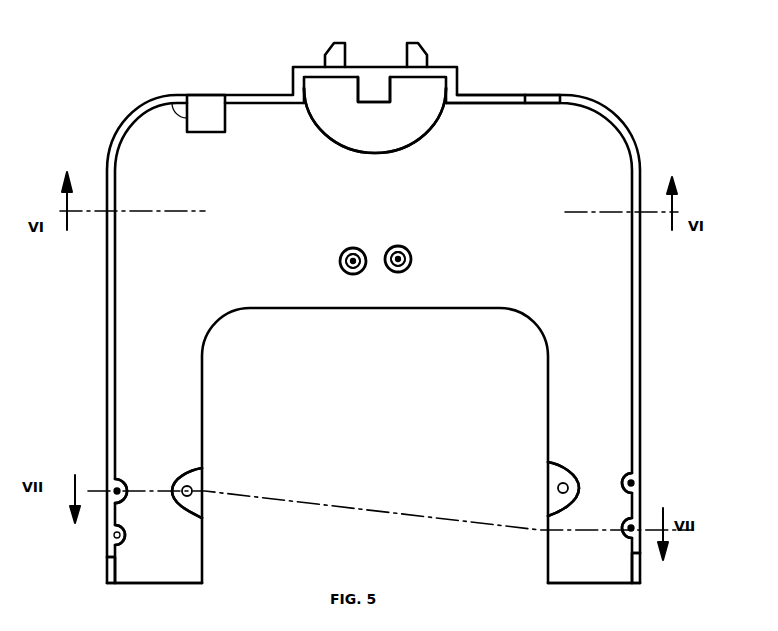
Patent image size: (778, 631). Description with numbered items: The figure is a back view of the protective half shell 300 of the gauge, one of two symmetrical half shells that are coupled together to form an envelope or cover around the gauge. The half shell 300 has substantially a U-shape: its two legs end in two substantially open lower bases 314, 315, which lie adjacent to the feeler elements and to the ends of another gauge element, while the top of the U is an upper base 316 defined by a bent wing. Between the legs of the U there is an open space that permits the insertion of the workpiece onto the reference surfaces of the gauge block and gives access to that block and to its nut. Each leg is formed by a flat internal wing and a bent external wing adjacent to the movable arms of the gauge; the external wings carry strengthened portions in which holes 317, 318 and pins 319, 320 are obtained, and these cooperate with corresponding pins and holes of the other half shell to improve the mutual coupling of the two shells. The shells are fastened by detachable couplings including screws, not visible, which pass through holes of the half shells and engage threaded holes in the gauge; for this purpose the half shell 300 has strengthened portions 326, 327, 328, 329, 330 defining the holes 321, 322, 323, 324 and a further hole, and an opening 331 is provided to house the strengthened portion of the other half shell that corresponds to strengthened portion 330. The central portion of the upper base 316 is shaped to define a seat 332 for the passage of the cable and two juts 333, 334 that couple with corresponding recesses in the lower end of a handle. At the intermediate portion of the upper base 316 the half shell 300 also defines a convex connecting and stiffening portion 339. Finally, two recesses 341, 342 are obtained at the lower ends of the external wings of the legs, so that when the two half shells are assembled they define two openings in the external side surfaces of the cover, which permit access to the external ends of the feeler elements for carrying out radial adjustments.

The half shell 300 is at (90, 330).
The lower base 314 is at (155, 591).
The lower base 315 is at (575, 590).
The upper base 316 is at (497, 99).
The hole 317 is at (116, 489).
The hole 318 is at (634, 527).
The pin 319 is at (114, 536).
The pin 320 is at (634, 482).
The hole 321 is at (355, 276).
The hole 322 is at (400, 274).
The hole 323 is at (193, 488).
The hole 324 is at (557, 488).
The strengthened portion 326 is at (342, 269).
The strengthened portion 327 is at (410, 262).
The strengthened portion 328 is at (192, 474).
The strengthened portion 329 is at (560, 463).
The strengthened portion 330 is at (172, 97).
The opening 331 is at (543, 98).
The seat 332 is at (378, 80).
The jut 333 is at (331, 56).
The jut 334 is at (419, 56).
The convex connecting and stiffening portion 339 is at (315, 124).
The recess 341 is at (112, 573).
The recess 342 is at (637, 568).